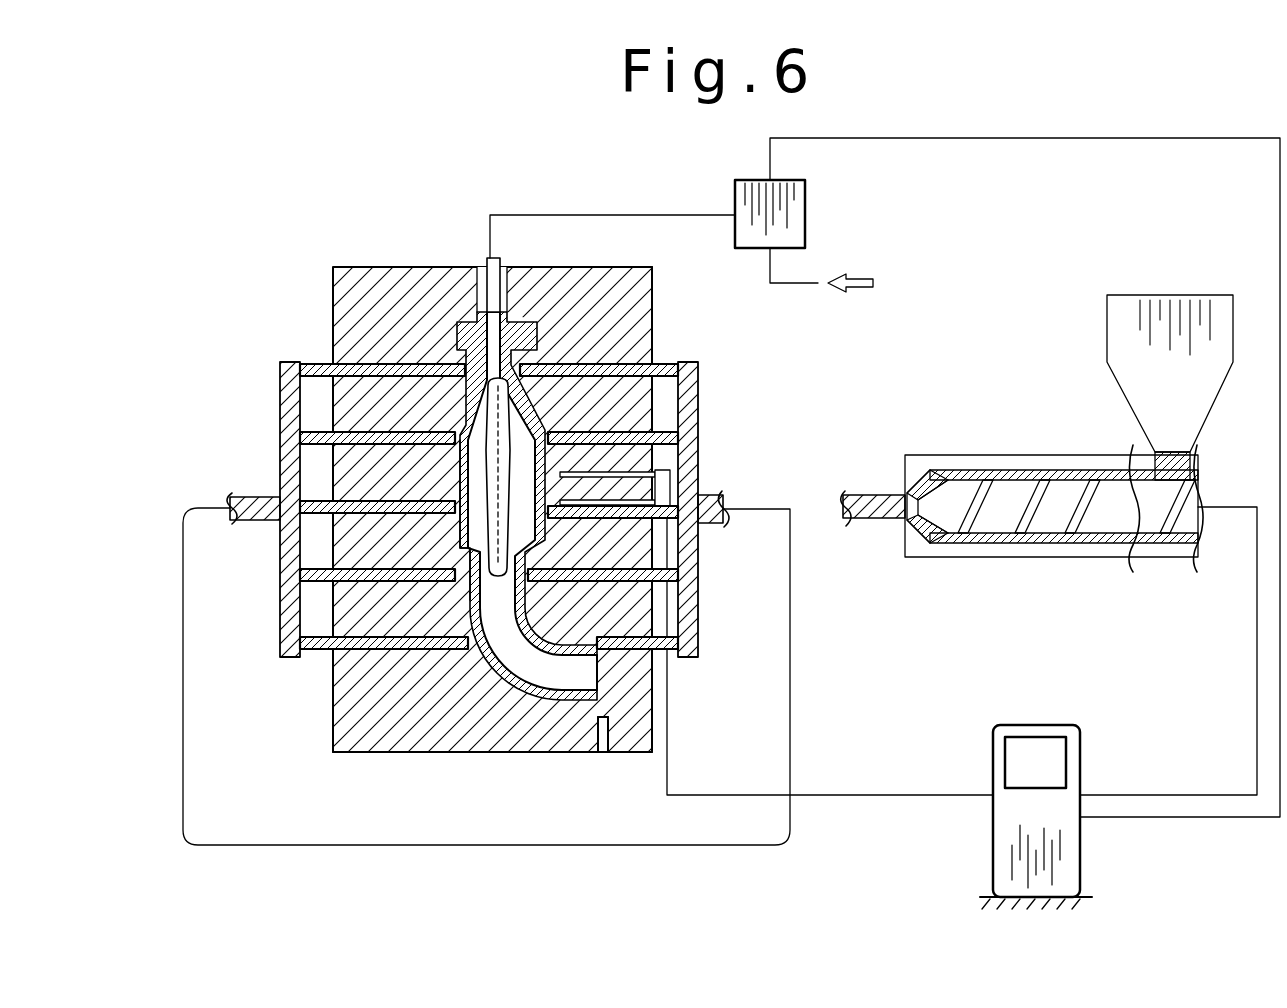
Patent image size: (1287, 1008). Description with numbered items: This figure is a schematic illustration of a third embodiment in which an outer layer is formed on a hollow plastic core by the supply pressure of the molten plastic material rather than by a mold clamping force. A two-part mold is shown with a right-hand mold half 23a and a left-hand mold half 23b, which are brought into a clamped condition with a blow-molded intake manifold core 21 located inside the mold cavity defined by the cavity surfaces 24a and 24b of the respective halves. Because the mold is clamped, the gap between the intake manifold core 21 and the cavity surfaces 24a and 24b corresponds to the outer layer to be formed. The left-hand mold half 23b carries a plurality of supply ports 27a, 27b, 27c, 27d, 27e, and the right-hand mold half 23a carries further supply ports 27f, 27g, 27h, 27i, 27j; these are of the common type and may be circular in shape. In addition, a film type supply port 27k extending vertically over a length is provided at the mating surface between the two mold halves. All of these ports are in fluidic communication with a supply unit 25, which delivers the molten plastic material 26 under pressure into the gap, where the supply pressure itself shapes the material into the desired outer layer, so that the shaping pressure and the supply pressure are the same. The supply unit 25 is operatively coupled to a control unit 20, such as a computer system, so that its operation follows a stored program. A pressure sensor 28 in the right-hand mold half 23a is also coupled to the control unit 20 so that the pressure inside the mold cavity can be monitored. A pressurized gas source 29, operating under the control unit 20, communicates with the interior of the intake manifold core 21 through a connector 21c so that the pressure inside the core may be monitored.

The control unit 20 is at (993, 835).
The intake manifold core 21 is at (455, 300).
The connector 21c is at (485, 262).
The right-hand mold half 23a is at (576, 298).
The left-hand mold half 23b is at (384, 288).
The cavity surface 24a is at (548, 348).
The cavity surface 24b is at (448, 350).
The supply unit 25 is at (1016, 550).
The molten plastic material 26 is at (266, 496).
The supply port 27a is at (385, 366).
The supply port 27b is at (375, 435).
The supply port 27c is at (375, 500).
The supply port 27d is at (355, 582).
The supply port 27e is at (385, 648).
The supply port 27f is at (612, 366).
The supply port 27g is at (640, 434).
The supply port 27h is at (560, 514).
The supply port 27i is at (590, 580).
The supply port 27j is at (615, 648).
The film type supply port 27k is at (462, 555).
The pressure sensor 28 is at (575, 476).
The pressurized gas source 29 is at (792, 218).